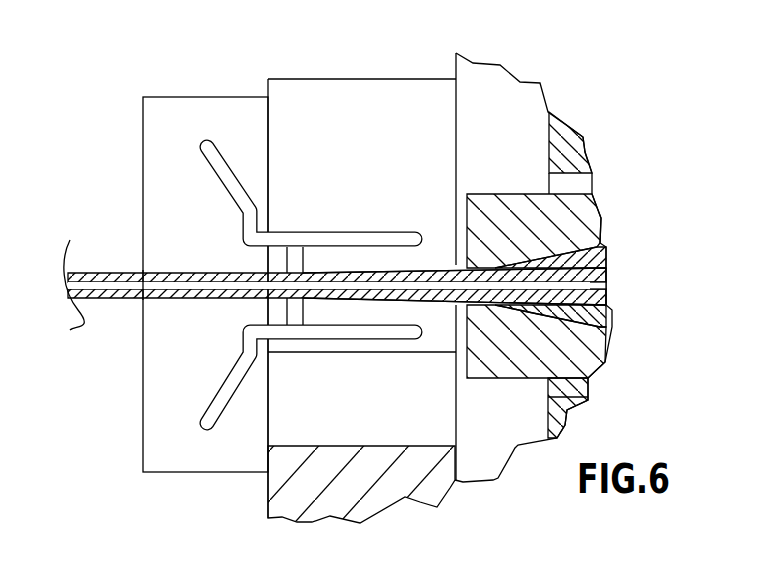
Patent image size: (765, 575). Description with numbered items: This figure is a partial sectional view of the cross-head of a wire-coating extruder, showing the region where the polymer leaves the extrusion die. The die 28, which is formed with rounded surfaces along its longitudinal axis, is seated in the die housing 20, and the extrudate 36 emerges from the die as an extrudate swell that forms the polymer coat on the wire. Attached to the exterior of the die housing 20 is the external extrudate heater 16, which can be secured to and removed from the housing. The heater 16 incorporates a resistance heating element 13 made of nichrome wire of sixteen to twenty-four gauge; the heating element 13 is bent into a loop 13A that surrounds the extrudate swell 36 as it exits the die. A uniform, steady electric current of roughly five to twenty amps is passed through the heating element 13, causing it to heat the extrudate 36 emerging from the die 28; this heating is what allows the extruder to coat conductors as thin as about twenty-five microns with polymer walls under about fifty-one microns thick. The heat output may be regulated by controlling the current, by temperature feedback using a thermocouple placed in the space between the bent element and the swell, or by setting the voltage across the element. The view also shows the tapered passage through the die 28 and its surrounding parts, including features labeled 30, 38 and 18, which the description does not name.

The die housing 20 is at (222, 62).
The external extrudate heater 16 is at (314, 79).
The resistance heating element 13 is at (228, 383).
The loop 13A is at (321, 231).
The die 28 is at (499, 193).
The tapered jaw 30 is at (537, 302).
The tube 38 is at (101, 261).
The extrudate 36 is at (362, 271).
The tube end 18 is at (606, 287).